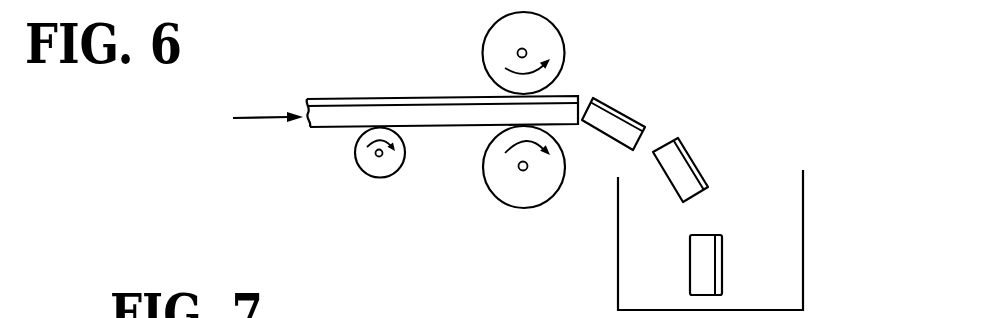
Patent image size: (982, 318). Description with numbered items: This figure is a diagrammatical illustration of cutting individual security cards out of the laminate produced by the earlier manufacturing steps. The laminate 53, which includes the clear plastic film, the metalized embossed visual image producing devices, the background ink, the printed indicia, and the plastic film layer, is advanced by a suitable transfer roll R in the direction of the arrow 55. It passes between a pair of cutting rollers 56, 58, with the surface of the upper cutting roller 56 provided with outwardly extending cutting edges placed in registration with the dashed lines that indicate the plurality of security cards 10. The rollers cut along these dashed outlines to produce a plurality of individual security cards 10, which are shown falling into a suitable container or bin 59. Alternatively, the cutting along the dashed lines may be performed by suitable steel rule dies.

The security card 10 is at (647, 135).
The laminate 53 is at (307, 103).
The arrow 55 is at (275, 118).
The upper cutting roller 56 is at (542, 13).
The cutting roller 58 is at (525, 208).
The container or bin 59 is at (804, 258).
The transfer roll R is at (385, 167).